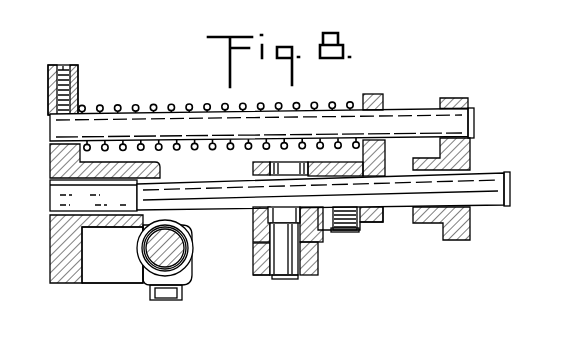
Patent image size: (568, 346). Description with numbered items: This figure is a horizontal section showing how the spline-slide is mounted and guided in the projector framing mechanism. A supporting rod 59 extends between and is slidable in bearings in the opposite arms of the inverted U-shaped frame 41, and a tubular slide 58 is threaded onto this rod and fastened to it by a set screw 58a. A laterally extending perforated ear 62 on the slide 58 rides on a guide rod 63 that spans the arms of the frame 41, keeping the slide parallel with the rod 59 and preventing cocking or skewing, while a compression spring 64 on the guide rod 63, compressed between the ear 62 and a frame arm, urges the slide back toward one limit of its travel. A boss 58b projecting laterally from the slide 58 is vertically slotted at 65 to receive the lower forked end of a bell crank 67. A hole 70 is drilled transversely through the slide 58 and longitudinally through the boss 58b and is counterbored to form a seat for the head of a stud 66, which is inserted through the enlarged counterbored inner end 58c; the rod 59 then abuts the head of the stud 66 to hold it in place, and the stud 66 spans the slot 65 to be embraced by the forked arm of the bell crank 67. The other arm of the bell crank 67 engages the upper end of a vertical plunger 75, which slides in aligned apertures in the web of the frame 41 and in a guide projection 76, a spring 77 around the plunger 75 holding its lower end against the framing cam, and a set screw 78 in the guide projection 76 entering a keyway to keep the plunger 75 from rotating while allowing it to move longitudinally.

The inverted U-shaped frame 41 is at (53, 252).
The tubular slide 58 is at (373, 224).
The set screw 58a is at (357, 233).
The boss 58b is at (263, 278).
The counterbored inner end 58c is at (272, 168).
The supporting rod 59 is at (497, 174).
The perforated ear 62 is at (384, 98).
The guide rod 63 is at (417, 117).
The compression spring 64 is at (157, 103).
The slot 65 is at (258, 268).
The stud 66 is at (291, 278).
The bell crank 67 is at (253, 243).
The hole 70 is at (320, 233).
The vertical plunger 75 is at (141, 268).
The guide projection 76 is at (102, 273).
The spring 77 is at (137, 230).
The set screw 78 is at (163, 301).